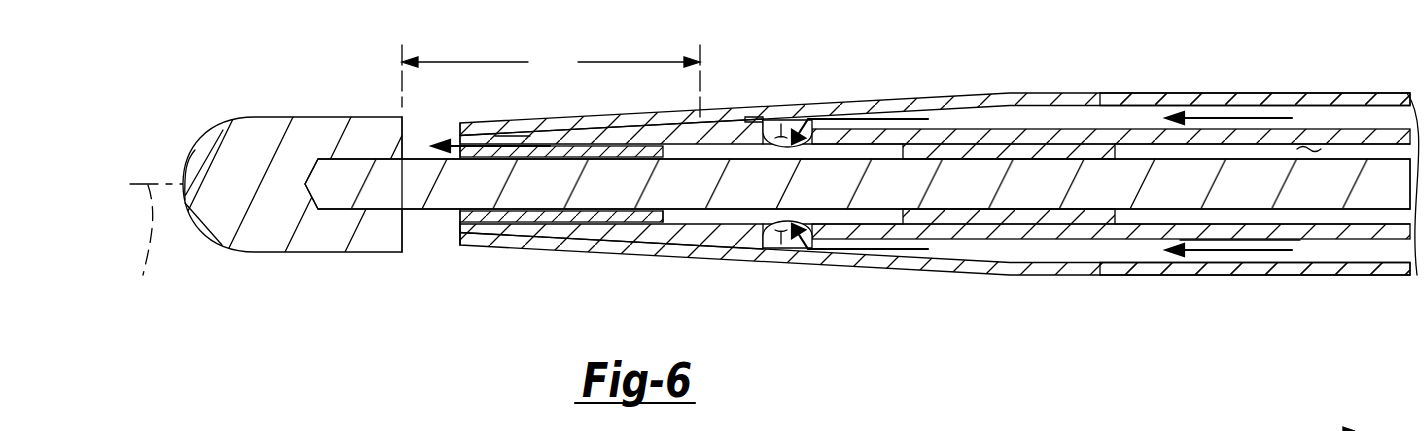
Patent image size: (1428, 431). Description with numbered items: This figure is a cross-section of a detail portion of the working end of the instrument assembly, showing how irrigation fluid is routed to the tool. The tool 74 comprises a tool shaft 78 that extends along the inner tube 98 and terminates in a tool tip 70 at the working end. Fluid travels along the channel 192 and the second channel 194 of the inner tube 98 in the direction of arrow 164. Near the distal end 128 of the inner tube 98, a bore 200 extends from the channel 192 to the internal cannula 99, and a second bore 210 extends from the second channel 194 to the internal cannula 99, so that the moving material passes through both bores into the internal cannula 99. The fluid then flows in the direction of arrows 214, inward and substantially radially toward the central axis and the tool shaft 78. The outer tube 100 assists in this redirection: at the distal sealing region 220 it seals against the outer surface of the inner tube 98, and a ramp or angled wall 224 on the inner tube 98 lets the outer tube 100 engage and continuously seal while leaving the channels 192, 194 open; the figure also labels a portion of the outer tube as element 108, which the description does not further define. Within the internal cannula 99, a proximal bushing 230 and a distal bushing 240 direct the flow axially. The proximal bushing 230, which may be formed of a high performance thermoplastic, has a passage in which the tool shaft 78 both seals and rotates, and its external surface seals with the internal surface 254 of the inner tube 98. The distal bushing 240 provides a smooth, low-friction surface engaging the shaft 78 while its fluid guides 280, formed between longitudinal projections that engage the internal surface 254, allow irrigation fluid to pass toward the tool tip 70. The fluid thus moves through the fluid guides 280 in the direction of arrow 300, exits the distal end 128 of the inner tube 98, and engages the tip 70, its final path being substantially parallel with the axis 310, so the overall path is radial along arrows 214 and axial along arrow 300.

The tool tip 70 is at (215, 143).
The tool 74 is at (408, 290).
The tool shaft 78 is at (1383, 175).
The inner tube 98 is at (693, 135).
The internal cannula 99 is at (1305, 148).
The outer tube 100 is at (1362, 273).
The tapered section of outer tube 108 is at (953, 112).
The distal end of the inner tube 128 is at (462, 232).
The arrow 164 is at (1248, 250).
The channel 192 is at (1063, 118).
The second channel 194 is at (1022, 250).
The bore 200 is at (781, 124).
The second bore 210 is at (773, 255).
The arrows 214 is at (865, 260).
The distal sealing region 220 is at (551, 81).
The ramp or angled wall 224 is at (746, 112).
The proximal bushing 230 is at (1087, 222).
The distal bushing 240 is at (565, 218).
The internal surface of the inner tube 254 is at (703, 218).
The fluid guides 280 is at (657, 147).
The arrow 300 is at (500, 133).
The axis 310 is at (147, 247).